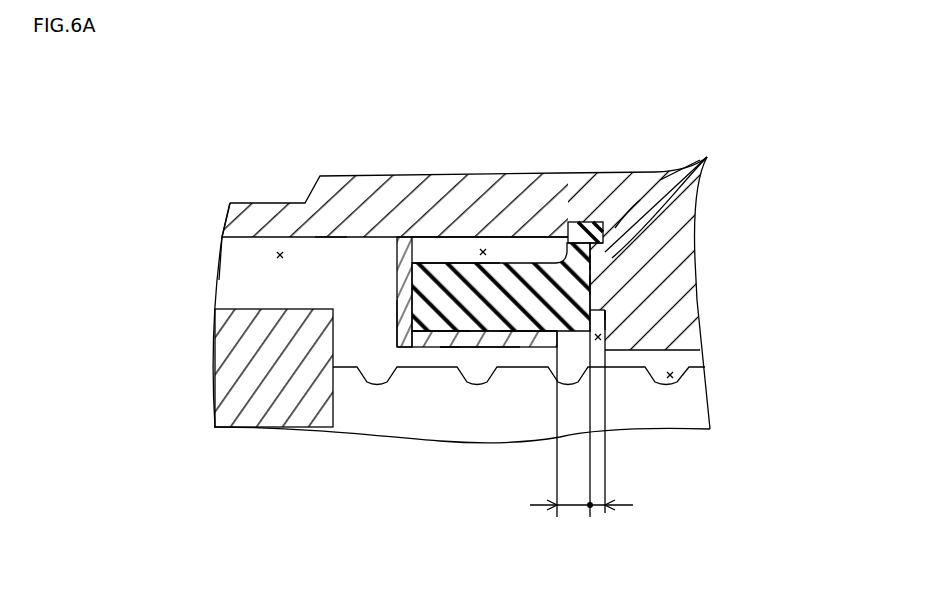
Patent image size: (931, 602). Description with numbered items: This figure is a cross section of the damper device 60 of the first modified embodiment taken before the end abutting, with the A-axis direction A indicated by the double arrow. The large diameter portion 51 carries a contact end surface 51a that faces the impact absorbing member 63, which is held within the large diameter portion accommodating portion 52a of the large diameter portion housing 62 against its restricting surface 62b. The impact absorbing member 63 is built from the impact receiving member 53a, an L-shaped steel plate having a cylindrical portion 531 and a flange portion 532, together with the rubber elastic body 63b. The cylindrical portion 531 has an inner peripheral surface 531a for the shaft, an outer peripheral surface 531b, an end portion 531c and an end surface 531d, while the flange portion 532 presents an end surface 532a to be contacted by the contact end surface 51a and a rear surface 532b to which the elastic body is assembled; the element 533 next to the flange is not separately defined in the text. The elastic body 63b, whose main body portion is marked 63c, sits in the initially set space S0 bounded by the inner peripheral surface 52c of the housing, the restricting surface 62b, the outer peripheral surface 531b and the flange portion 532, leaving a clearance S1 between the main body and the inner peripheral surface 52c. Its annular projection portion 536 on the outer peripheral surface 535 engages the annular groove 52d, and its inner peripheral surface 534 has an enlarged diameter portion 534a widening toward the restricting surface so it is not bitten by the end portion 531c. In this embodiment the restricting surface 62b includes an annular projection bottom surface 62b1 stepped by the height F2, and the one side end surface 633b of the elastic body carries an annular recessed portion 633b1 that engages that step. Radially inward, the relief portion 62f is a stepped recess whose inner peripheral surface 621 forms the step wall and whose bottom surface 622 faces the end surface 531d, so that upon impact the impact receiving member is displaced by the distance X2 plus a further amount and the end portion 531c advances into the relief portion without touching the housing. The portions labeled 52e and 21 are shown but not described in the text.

The damper device 60 is at (317, 108).
The large diameter portion housing 62 is at (533, 210).
The restricting surface 62b is at (571, 222).
The annular projection bottom surface 62b1 is at (620, 262).
The relief portion 62f is at (612, 322).
The inner peripheral surface of relief portion 621 is at (620, 285).
The bottom surface of relief portion 622 is at (602, 337).
The impact absorbing member 63 is at (475, 230).
The elastic body 63b is at (432, 347).
The groove side face 63c is at (442, 347).
The one side end surface 633b is at (707, 158).
The annular recessed portion 633b1 is at (615, 235).
The base body 21 is at (683, 410).
The large diameter portion 51 is at (216, 281).
The contact end surface 51a is at (333, 328).
The large diameter portion accommodating portion 52a is at (230, 203).
The inner peripheral surface 52c is at (278, 253).
The annular groove 52d is at (603, 248).
The second member recess 52e is at (672, 376).
The impact receiving member 53a is at (385, 375).
The cylindrical portion 531 is at (418, 333).
The inner peripheral surface of cylindrical portion 531a is at (430, 347).
The outer peripheral surface of cylindrical portion 531b is at (505, 350).
The end portion of cylindrical portion 531c is at (545, 350).
The end surface of cylindrical portion 531d is at (557, 360).
The flange portion 532 is at (398, 290).
The end surface to be contacted 532a is at (380, 305).
The rear surface 532b is at (398, 340).
The retainer corner 533 is at (347, 237).
The inner peripheral surface of elastic body 534 is at (480, 348).
The enlarged diameter portion 534a is at (612, 305).
The outer peripheral surface of elastic body 535 is at (445, 263).
The annular projection portion 536 is at (593, 220).
The initially set space S0 is at (528, 311).
The clearance S1 is at (486, 250).
The displacement distance X2 is at (581, 492).
The step height F2 is at (606, 503).
The A-axis direction A is at (214, 100).